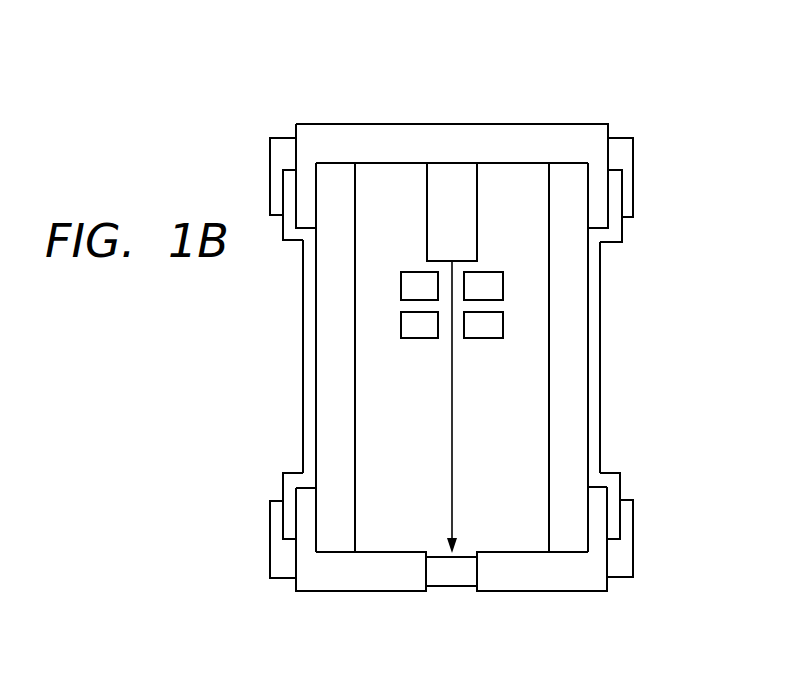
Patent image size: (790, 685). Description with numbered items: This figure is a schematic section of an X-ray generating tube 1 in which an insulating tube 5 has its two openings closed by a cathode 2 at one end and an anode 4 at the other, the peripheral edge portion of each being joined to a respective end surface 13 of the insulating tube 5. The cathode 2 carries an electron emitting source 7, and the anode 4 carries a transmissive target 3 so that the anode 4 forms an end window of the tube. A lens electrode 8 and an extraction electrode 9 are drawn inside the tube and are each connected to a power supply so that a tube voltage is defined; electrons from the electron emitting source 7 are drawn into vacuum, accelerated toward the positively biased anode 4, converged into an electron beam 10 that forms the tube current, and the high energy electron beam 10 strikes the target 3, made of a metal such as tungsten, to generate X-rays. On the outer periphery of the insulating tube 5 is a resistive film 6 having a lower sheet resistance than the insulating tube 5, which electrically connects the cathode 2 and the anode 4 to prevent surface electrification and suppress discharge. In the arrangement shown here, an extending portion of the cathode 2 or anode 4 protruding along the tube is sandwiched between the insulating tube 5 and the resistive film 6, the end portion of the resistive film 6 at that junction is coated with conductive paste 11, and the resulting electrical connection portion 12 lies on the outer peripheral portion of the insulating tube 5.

The X-ray generating tube 1 is at (575, 88).
The cathode 2 is at (446, 133).
The transmissive target 3 is at (452, 573).
The anode 4 is at (547, 578).
The insulating tube 5 is at (325, 343).
The resistive film 6 is at (307, 395).
The electron emitting source 7 is at (465, 247).
The lens electrode 8 is at (493, 289).
The extraction electrode 9 is at (493, 328).
The electron beam 10 is at (453, 440).
The conductive paste 11 is at (625, 153).
The electrical connection portion 12 is at (610, 203).
The end surface 13 is at (335, 163).